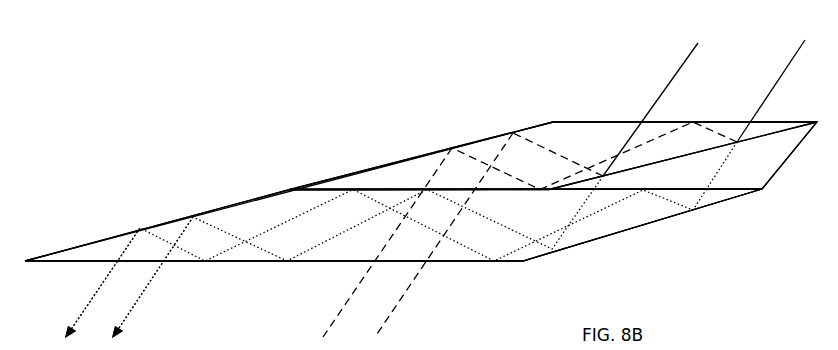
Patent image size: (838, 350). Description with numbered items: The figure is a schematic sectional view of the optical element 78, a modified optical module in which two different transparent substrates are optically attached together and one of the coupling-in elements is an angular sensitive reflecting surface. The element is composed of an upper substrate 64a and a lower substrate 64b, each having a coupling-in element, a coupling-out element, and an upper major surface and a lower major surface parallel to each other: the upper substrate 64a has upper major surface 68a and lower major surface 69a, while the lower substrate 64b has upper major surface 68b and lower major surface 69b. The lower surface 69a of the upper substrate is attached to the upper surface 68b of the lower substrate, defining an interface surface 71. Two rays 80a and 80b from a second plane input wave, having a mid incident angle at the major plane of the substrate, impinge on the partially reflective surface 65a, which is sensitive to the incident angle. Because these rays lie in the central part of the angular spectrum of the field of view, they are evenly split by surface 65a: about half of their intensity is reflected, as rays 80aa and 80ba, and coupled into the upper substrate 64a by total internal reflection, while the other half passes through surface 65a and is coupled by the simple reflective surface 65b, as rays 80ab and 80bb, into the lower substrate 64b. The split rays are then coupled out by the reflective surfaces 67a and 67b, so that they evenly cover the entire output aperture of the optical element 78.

The optical element 78 is at (313, 137).
The upper substrate 64a is at (513, 151).
The lower substrate 64b is at (467, 235).
The partially reflecting surface 65a is at (657, 158).
The reflective surface 65b is at (693, 210).
The upper reflective surface 67a is at (452, 148).
The reflective surface 67b is at (140, 228).
The upper major surface 68a is at (577, 122).
The upper major surface 68b is at (595, 190).
The lower major surface 69a is at (393, 189).
The lower major surface 69b is at (193, 262).
The interface surface 71 is at (290, 190).
The ray 80a is at (793, 60).
The ray 80b is at (692, 53).
The ray 80aa is at (333, 317).
The ray 80ba is at (393, 310).
The ray 80ab is at (88, 297).
The ray 80bb is at (138, 297).